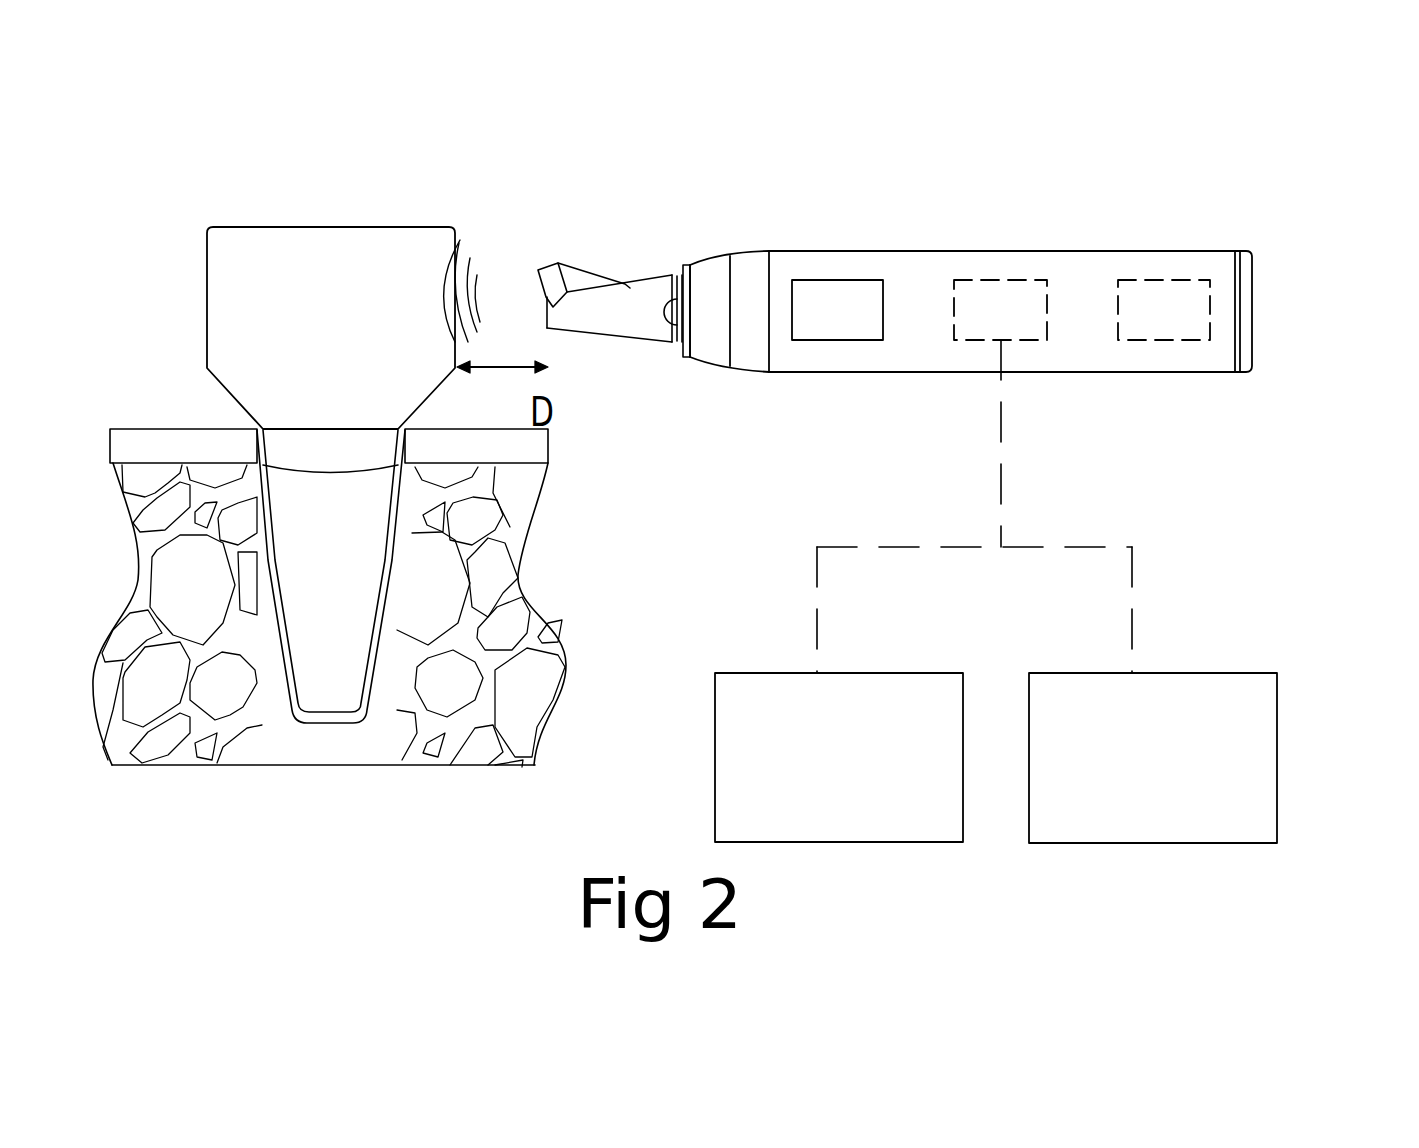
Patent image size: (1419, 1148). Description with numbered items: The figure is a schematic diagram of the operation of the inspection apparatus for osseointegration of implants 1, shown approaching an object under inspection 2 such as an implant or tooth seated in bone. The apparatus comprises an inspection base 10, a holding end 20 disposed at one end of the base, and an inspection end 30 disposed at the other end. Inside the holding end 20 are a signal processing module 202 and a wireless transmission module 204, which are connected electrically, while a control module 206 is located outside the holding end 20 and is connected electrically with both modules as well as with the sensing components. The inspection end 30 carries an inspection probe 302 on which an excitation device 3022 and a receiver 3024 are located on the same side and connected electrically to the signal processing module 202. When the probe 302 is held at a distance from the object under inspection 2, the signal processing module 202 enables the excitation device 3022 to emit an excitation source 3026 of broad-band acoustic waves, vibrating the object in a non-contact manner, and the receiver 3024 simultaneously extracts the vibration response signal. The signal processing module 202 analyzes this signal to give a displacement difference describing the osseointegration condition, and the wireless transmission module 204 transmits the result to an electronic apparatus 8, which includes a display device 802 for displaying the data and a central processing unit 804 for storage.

The inspection apparatus for osseointegration of implants 1 is at (1352, 90).
The object under inspection 2 is at (268, 247).
The electronic apparatus 8 is at (1054, 503).
The inspection base 10 is at (1192, 403).
The holding end 20 is at (1225, 303).
The inspection end 30 is at (745, 262).
The signal processing module 202 is at (1163, 310).
The wireless transmission module 204 is at (1001, 310).
The control module 206 is at (838, 310).
The inspection probe 302 is at (651, 370).
The display device 802 is at (1277, 748).
The central processing unit 804 is at (715, 737).
The excitation device 3022 is at (572, 268).
The receiver 3024 is at (655, 300).
The excitation source 3026 is at (482, 233).